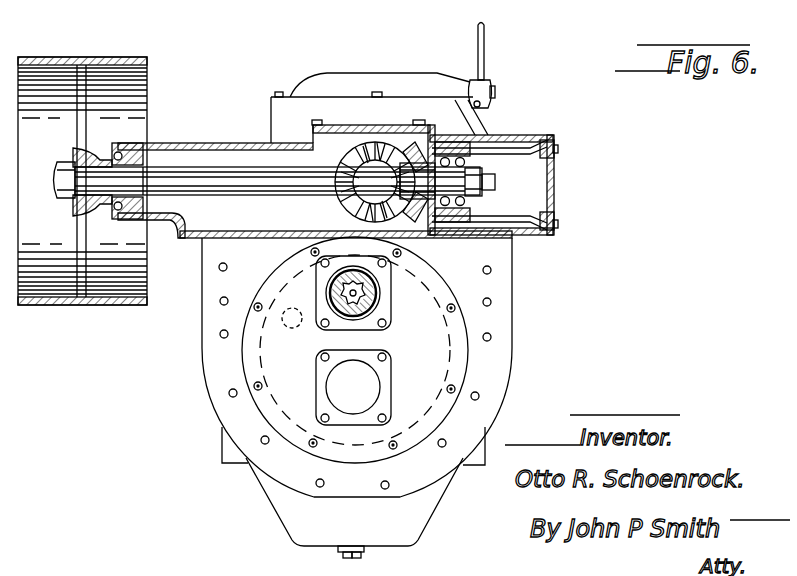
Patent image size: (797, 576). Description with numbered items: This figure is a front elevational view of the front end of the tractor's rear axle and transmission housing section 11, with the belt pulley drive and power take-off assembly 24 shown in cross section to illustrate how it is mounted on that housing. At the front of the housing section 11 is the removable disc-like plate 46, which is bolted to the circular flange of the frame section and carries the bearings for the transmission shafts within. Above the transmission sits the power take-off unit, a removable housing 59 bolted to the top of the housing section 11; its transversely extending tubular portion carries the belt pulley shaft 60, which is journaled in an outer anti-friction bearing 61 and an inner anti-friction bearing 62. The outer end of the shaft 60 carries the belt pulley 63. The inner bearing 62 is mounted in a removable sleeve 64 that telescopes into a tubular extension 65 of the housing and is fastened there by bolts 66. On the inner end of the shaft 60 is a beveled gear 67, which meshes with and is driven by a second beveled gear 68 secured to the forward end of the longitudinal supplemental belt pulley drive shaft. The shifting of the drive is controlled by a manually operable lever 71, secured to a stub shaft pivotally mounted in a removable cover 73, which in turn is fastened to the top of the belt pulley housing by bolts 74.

The rear axle and transmission housing section 11 is at (201, 372).
The belt pulley drive and power take-off assembly 24 is at (245, 235).
The removable disc-like plate 46 is at (435, 370).
The housing 59 is at (262, 128).
The belt pulley shaft 60 is at (210, 180).
The anti-friction bearing 61 is at (142, 163).
The anti-friction bearing 62 is at (460, 145).
The belt pulley 63 is at (80, 58).
The removable sleeve 64 is at (520, 150).
The tubular extension 65 is at (545, 135).
The bolts 66 is at (558, 226).
The beveled gear 67 is at (405, 150).
The second beveled gear 68 is at (346, 206).
The manually operable lever 71 is at (484, 62).
The removable cover 73 is at (402, 80).
The bolts 74 is at (283, 92).